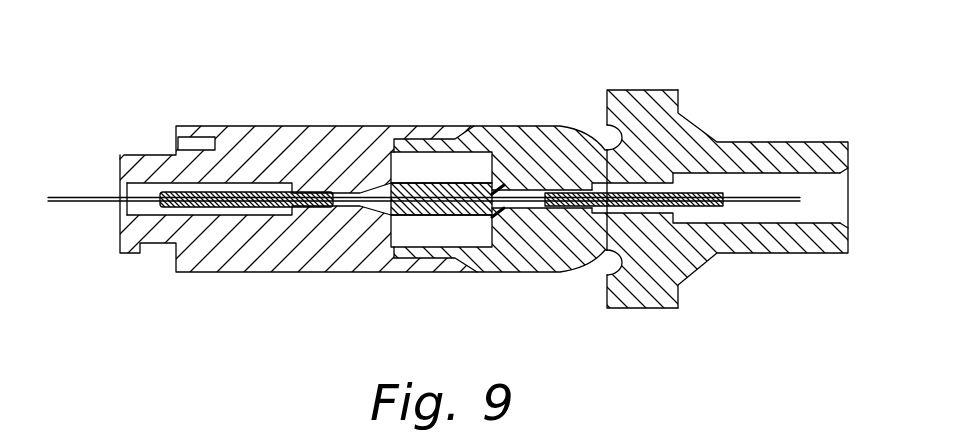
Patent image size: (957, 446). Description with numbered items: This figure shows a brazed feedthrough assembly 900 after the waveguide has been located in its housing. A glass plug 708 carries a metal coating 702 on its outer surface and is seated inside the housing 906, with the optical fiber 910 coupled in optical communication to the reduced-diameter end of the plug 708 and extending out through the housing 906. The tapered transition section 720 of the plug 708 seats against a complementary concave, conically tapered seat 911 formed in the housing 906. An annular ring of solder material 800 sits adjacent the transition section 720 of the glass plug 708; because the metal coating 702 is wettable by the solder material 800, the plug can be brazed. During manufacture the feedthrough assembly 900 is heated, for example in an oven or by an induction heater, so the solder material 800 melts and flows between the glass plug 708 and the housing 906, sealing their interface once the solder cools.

The feedthrough assembly 900 is at (228, 55).
The housing 906 is at (642, 90).
The fiber 910 is at (68, 197).
The metal coating 702 is at (414, 183).
The conically tapered seat 911 is at (472, 186).
The glass plug 708 is at (426, 226).
The solder material 800 is at (493, 216).
The transition section 720 is at (499, 212).